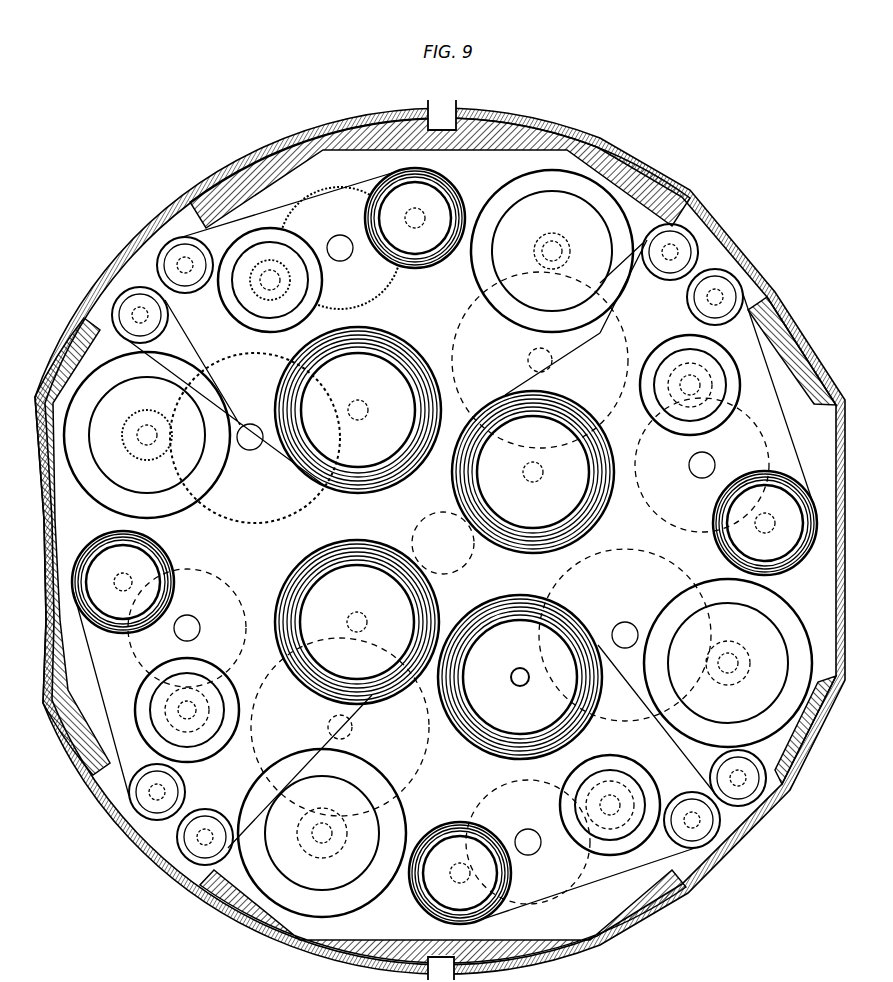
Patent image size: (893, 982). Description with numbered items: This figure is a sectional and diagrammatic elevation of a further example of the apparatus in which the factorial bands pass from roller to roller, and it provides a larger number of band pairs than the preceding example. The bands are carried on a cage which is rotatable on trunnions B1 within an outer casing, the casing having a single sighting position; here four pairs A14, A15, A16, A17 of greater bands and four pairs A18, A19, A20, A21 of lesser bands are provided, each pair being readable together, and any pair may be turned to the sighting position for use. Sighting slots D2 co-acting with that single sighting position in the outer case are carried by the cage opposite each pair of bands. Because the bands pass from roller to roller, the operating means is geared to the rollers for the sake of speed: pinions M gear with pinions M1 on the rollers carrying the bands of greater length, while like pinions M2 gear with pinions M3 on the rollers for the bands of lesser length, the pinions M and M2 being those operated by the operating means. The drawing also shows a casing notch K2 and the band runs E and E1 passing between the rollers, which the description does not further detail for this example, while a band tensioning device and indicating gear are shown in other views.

The casing notch K2 is at (440, 108).
The pair of greater bands A14 is at (252, 422).
The pair of greater bands A15 is at (542, 361).
The pair of greater bands A16 is at (625, 669).
The pair of greater bands A17 is at (338, 728).
The pair of lesser bands A18 is at (262, 214).
The pair of lesser bands A19 is at (678, 345).
The pair of lesser bands A20 is at (650, 770).
The pair of lesser bands A21 is at (150, 700).
The trunnions B1 is at (443, 543).
The sighting slots D2 is at (152, 262).
The belt E is at (240, 400).
The belt E1 is at (208, 262).
The pinions M is at (440, 544).
The pinions M1 is at (434, 542).
The pinions M2 is at (520, 790).
The pinions M3 is at (262, 298).